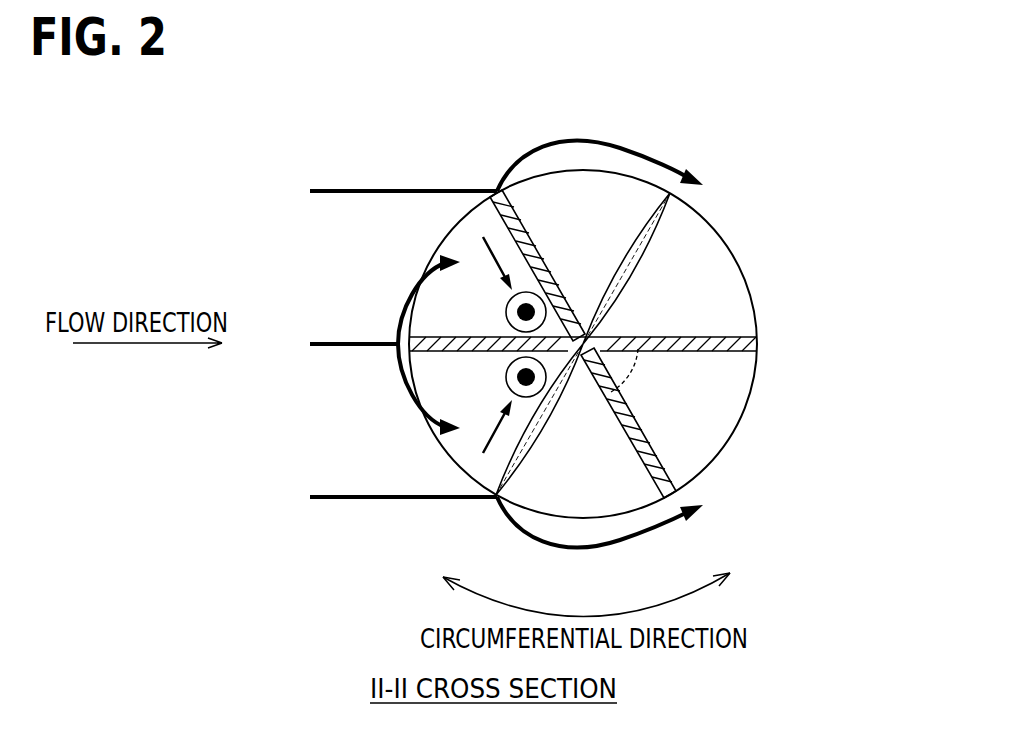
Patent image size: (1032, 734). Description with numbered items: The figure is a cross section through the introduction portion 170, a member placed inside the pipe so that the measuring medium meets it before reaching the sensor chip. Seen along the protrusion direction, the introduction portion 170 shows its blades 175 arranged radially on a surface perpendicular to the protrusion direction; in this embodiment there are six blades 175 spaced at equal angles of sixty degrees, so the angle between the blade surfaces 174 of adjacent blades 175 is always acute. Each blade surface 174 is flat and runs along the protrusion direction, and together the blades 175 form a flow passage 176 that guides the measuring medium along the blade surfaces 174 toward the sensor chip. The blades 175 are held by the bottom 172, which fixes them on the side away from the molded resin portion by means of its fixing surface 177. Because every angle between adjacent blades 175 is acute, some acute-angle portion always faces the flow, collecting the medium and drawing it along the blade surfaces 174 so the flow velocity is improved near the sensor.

The introduction portion 170 is at (608, 334).
The bottom 172 is at (748, 282).
The blade surface 174 is at (722, 338).
The blade 175 is at (505, 214).
The flow passage 176 is at (510, 298).
The fixing surface 177 is at (712, 273).